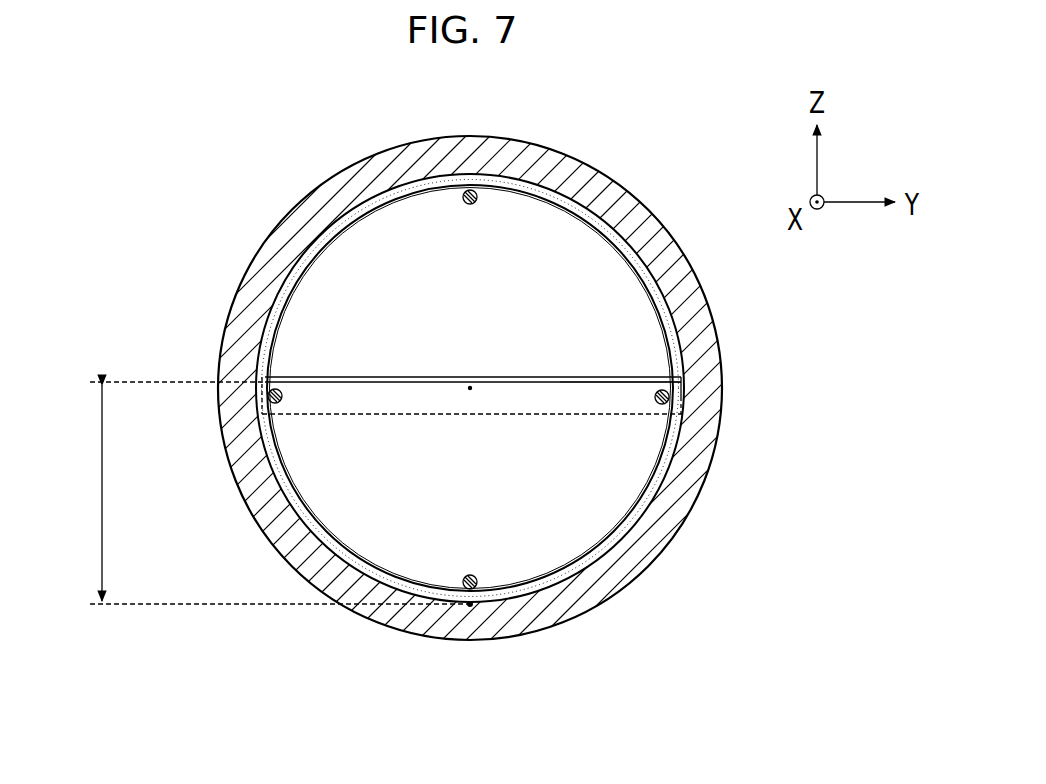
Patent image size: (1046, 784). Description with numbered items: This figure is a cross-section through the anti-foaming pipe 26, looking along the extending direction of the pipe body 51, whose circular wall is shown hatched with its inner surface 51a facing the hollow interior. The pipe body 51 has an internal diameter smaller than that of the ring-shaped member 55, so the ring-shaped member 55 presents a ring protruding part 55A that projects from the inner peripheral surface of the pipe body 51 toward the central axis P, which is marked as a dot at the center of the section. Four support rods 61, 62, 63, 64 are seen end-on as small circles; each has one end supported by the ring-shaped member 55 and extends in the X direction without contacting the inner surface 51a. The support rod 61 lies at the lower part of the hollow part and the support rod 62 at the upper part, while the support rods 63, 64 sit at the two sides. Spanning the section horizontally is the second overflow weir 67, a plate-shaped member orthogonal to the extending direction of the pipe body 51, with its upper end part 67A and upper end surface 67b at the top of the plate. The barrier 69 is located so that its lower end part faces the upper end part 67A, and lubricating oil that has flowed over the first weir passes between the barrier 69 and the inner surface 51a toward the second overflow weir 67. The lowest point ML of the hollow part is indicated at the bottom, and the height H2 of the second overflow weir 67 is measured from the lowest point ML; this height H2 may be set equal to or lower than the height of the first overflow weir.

The anti-foaming pipe 26 is at (157, 96).
The pipe body 51 is at (523, 362).
The inner surface of the pipe body 51a is at (661, 204).
The ring-shaped member 55 is at (470, 339).
The ring protruding part 55A is at (459, 356).
The support rod 61 is at (479, 544).
The support rod 62 is at (463, 138).
The support rod 63 is at (218, 414).
The support rod 64 is at (724, 394).
The second overflow weir 67 is at (527, 467).
The upper end part of the second overflow weir 67A is at (535, 334).
The upper end surface of the second overflow weir 67b is at (668, 306).
The barrier 69 is at (612, 172).
The central axis P is at (557, 519).
The lowest point ML is at (294, 646).
The height of the second overflow weir H2 is at (167, 491).